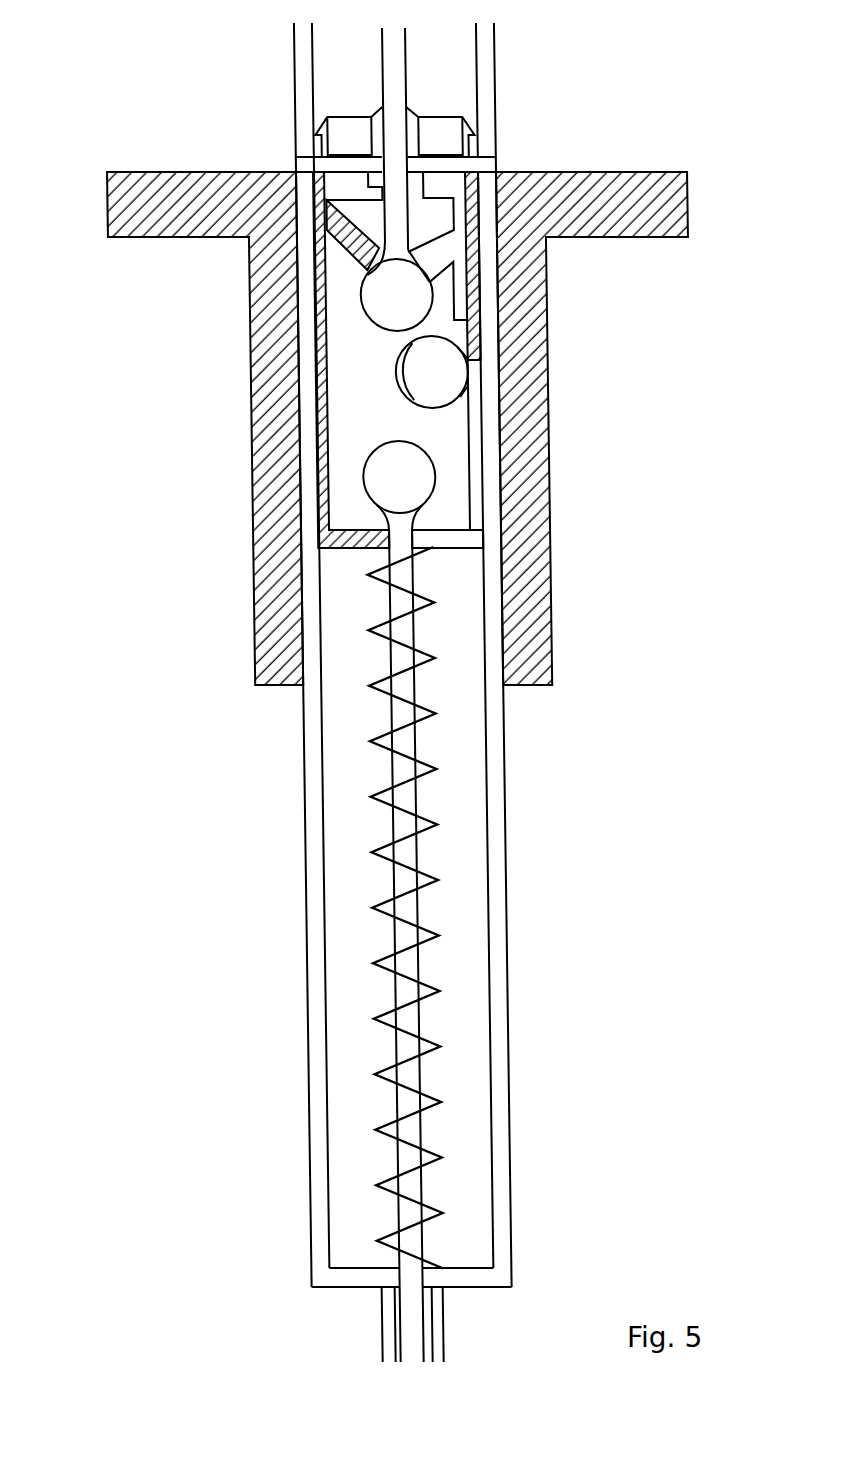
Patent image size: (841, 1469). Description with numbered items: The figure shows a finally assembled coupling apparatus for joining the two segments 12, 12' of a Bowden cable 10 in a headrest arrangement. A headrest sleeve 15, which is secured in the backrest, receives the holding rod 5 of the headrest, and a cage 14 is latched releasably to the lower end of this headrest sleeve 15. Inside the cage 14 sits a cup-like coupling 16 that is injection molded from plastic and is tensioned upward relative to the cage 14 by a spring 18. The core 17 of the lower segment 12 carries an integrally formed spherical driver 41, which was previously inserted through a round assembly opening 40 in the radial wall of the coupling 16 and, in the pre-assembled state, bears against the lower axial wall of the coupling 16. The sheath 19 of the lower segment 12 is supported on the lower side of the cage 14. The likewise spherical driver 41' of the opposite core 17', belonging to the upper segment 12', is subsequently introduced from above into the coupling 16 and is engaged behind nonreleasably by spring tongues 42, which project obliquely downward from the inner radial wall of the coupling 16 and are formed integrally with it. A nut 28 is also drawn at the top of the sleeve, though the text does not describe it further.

The holding rod 5 is at (483, 100).
The Bowden cable 10 is at (419, 655).
The lower segment 12 is at (415, 946).
The upper segment 12' is at (400, 150).
The cage 14 is at (313, 898).
The headrest sleeve 15 is at (190, 207).
The coupling 16 is at (322, 484).
The core 17 is at (502, 946).
The opposite core 17' is at (488, 155).
The spring 18 is at (383, 1148).
The sheath 19 is at (385, 1318).
The locking nut 28 is at (323, 160).
The assembly opening 40 is at (432, 372).
The spherical driver 41 is at (507, 485).
The spherical driver 41' is at (504, 295).
The spring tongues 42 is at (368, 260).